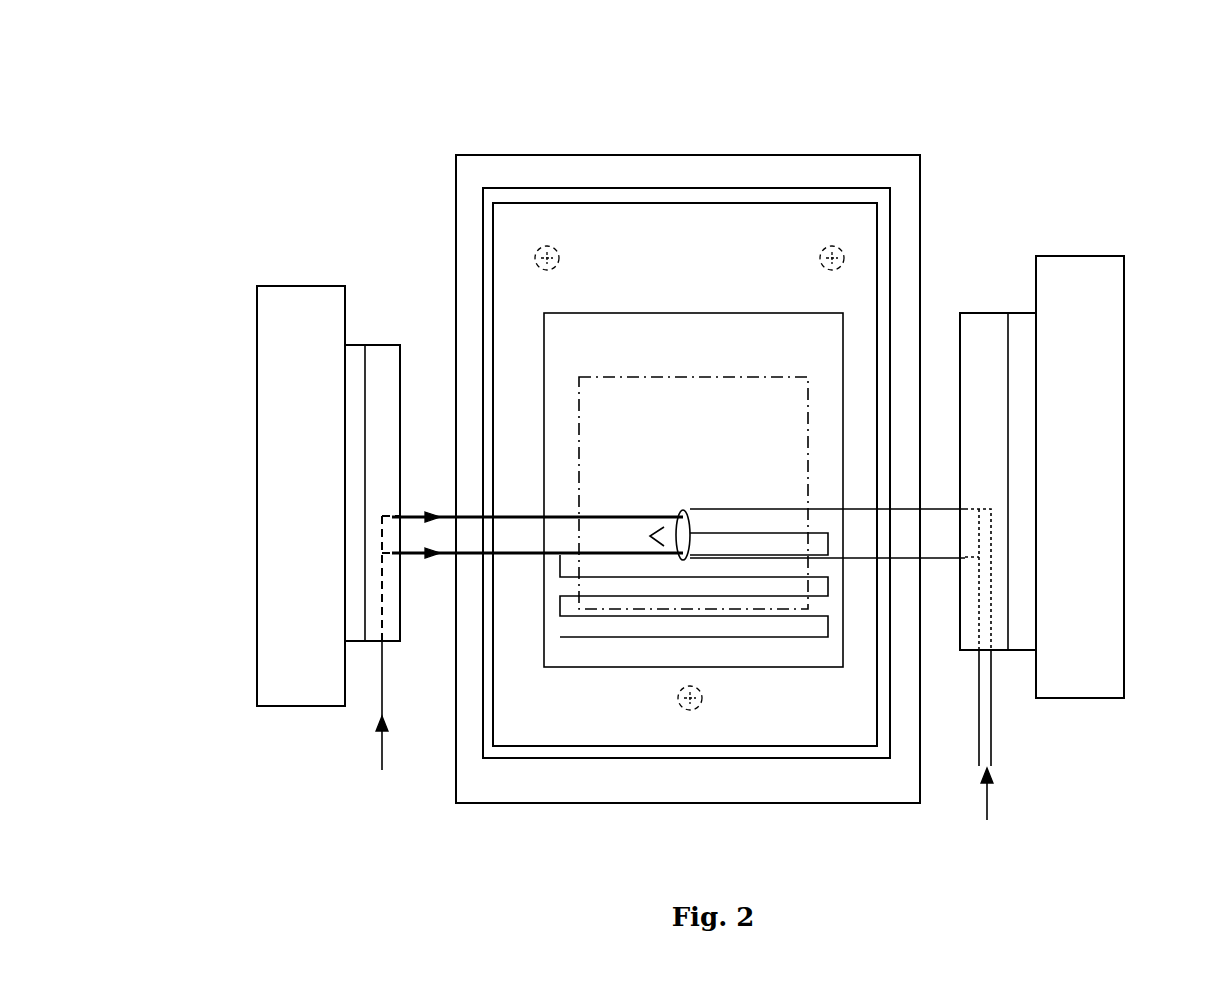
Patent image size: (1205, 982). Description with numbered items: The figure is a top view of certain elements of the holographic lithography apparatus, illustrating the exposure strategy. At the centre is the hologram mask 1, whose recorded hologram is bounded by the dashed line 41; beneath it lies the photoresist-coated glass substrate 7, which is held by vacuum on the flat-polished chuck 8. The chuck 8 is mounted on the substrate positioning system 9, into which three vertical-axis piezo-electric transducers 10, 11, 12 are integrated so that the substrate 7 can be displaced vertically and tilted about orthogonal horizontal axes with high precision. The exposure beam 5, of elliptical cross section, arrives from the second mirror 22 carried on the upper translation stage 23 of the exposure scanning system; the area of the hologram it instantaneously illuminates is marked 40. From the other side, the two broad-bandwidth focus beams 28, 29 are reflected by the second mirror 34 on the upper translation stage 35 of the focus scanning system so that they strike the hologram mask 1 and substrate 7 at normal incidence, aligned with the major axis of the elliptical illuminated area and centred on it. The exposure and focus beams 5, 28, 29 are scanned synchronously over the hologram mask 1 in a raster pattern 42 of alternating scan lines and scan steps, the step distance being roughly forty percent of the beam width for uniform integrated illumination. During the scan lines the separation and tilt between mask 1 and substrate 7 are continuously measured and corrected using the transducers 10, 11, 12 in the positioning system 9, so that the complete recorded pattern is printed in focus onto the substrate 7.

The hologram mask 1 is at (688, 313).
The exposure beam 5 is at (1005, 797).
The glass substrate 7 is at (868, 733).
The vacuum chuck 8 is at (530, 188).
The substrate positioning system 9 is at (893, 155).
The piezo-electric transducer 10 is at (692, 710).
The piezo-electric transducer 11 is at (535, 252).
The piezo-electric transducer 12 is at (835, 245).
The second mirror 22 is at (985, 313).
The upper translation stage 23 is at (1120, 486).
The focus beam 28 is at (425, 560).
The focus beam 29 is at (422, 505).
The second mirror 34 is at (378, 345).
The upper translation stage 35 is at (262, 535).
The instantaneously illuminated area 40 is at (675, 556).
The boundary of the hologram 41 is at (808, 395).
The raster pattern 42 is at (755, 637).